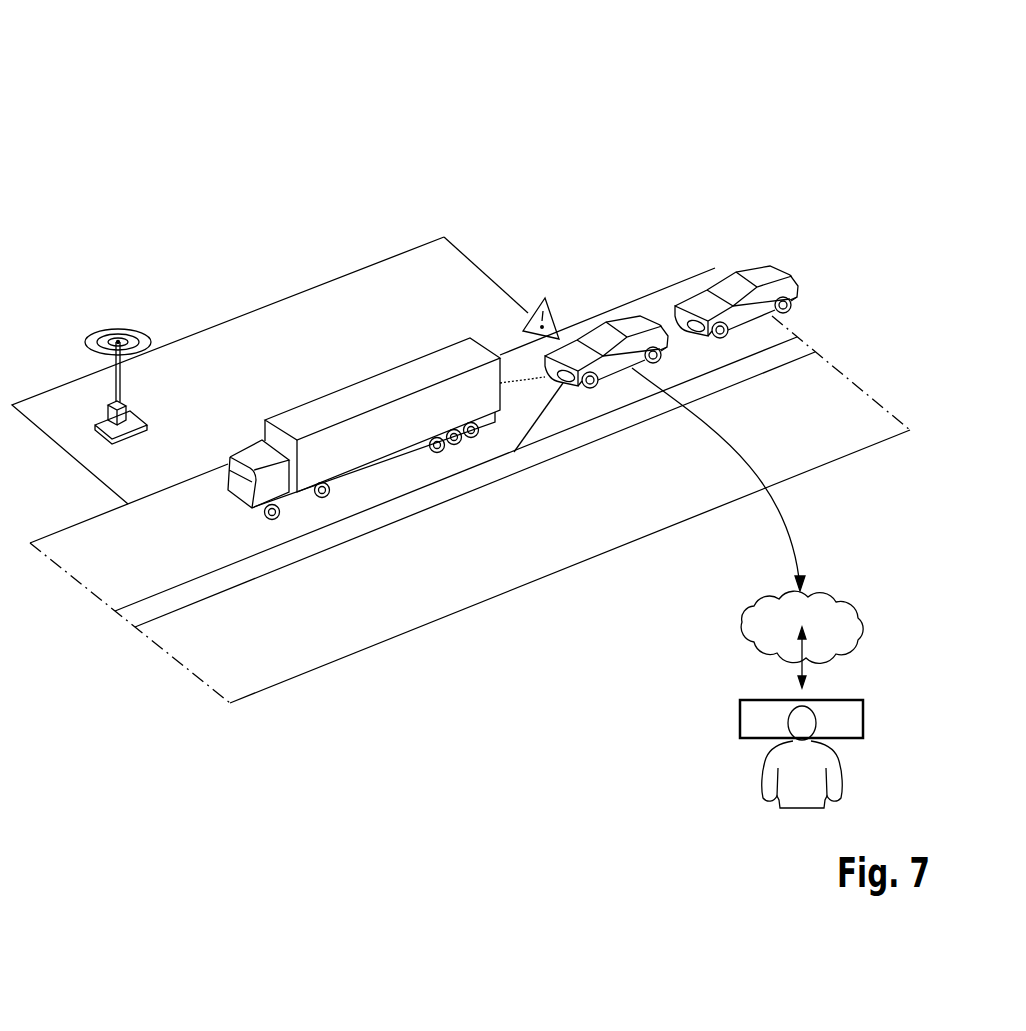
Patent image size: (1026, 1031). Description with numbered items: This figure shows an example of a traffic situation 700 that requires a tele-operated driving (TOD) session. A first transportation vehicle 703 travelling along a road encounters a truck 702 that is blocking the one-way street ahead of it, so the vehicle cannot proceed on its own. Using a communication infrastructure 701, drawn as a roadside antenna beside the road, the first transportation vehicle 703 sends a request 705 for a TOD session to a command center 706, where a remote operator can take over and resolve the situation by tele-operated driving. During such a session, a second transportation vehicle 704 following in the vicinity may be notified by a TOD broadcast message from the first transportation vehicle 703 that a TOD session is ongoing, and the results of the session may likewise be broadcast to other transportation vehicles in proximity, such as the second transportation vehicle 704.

The traffic situation 700 is at (200, 104).
The communication infrastructure 701 is at (122, 328).
The truck 702 is at (372, 392).
The first transportation vehicle 703 is at (610, 327).
The second transportation vehicle 704 is at (743, 272).
The request 705 is at (738, 623).
The command center 706 is at (762, 787).